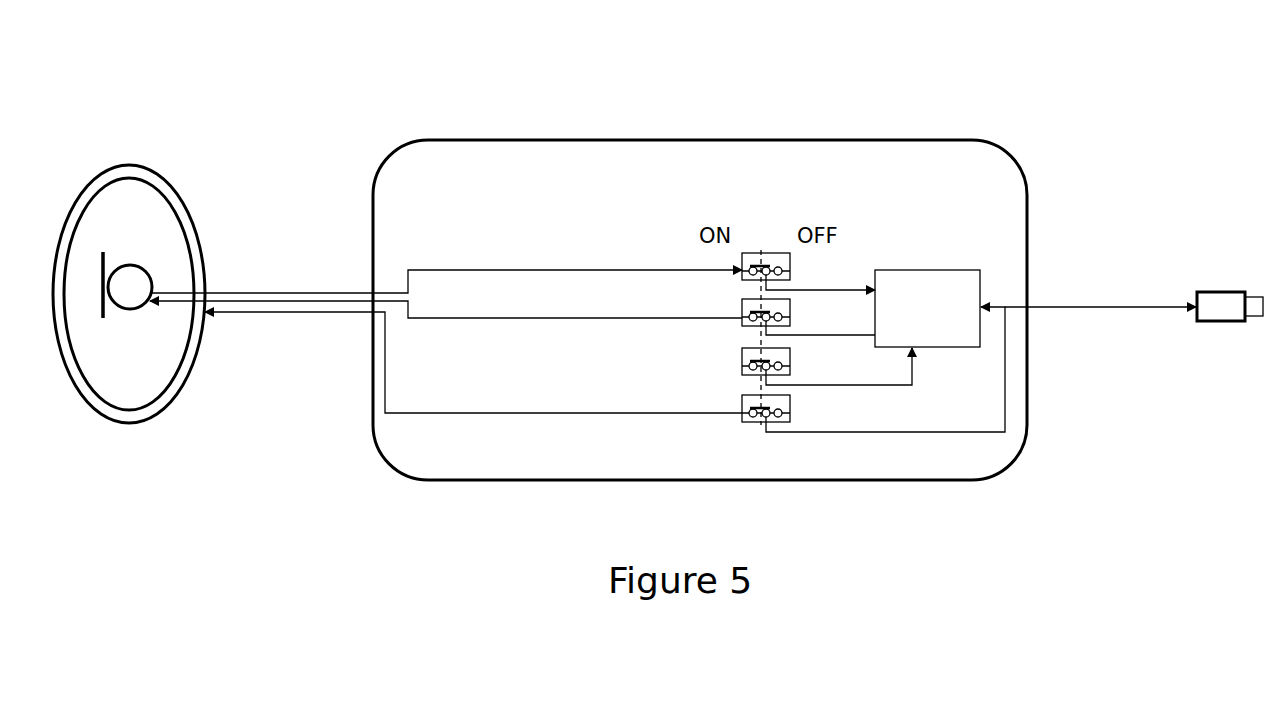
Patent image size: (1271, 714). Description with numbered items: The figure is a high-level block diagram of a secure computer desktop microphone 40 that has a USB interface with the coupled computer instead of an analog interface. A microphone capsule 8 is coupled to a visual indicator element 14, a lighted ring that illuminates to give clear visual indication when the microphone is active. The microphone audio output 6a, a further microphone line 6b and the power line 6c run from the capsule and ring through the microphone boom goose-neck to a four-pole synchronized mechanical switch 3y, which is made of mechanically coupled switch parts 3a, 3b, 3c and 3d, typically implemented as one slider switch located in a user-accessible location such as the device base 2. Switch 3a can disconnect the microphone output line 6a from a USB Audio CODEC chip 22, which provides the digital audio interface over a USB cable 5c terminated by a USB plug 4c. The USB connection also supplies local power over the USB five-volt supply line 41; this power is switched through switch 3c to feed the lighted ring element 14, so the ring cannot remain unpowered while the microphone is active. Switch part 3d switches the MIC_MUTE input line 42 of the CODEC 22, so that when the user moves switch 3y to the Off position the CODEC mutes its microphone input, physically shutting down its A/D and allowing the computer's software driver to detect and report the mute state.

The secure computer desktop microphone 40 is at (298, 76).
The device base 2 is at (1018, 366).
The visual indicator element 14 is at (178, 187).
The microphone capsule 8 is at (126, 265).
The microphone audio output 6a is at (233, 292).
The microphone line 6b is at (268, 312).
The power line 6c is at (318, 314).
The 4-Pole switch 3y is at (755, 233).
The switch 3a is at (774, 253).
The switch 3b is at (742, 303).
The switch 3c is at (742, 397).
The mute switch 3d is at (742, 350).
The USB Audio CODEC chip 22 is at (888, 270).
The MIC_MUTE input line 42 is at (912, 385).
The USB +5V supply line 41 is at (876, 433).
The USB cable 5c is at (1111, 300).
The USB plug 4c is at (1224, 292).